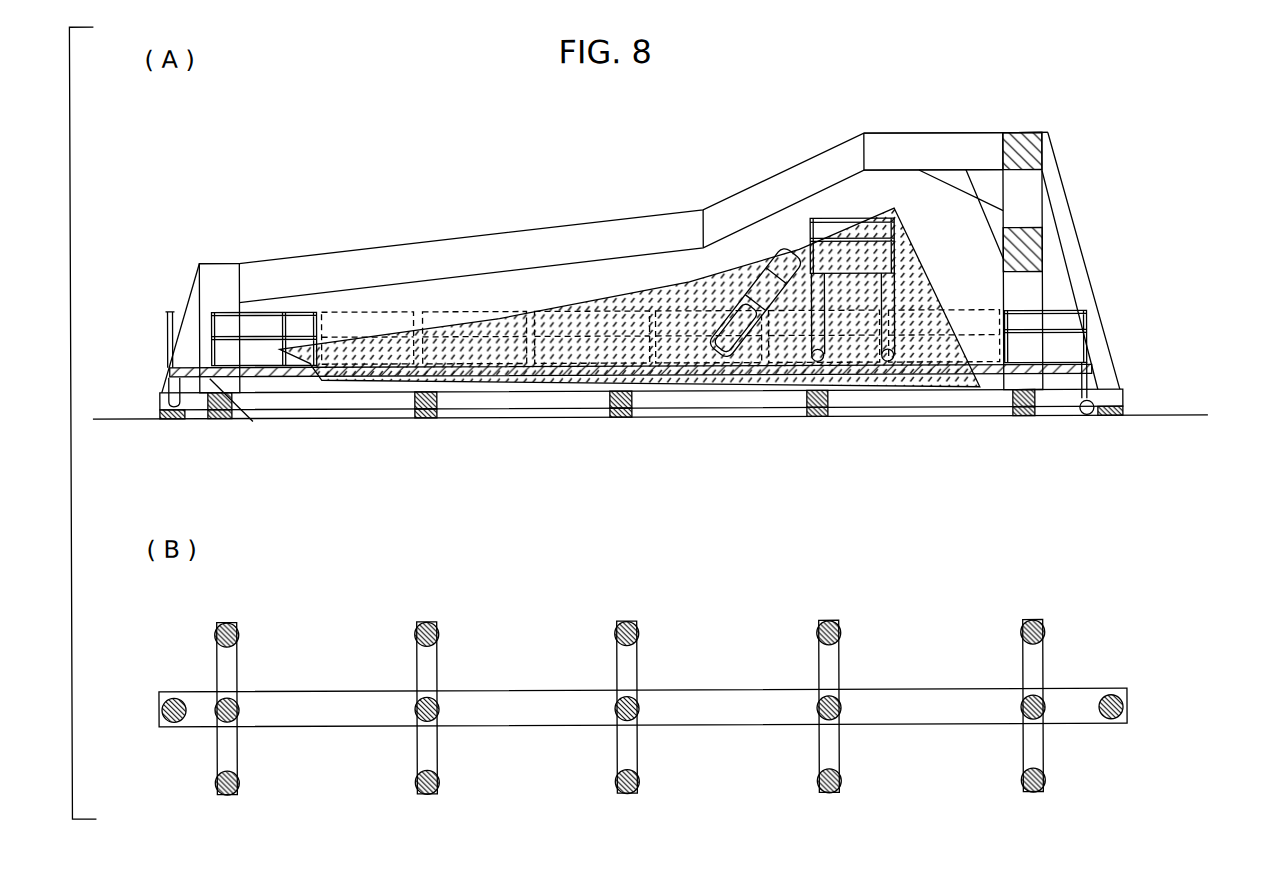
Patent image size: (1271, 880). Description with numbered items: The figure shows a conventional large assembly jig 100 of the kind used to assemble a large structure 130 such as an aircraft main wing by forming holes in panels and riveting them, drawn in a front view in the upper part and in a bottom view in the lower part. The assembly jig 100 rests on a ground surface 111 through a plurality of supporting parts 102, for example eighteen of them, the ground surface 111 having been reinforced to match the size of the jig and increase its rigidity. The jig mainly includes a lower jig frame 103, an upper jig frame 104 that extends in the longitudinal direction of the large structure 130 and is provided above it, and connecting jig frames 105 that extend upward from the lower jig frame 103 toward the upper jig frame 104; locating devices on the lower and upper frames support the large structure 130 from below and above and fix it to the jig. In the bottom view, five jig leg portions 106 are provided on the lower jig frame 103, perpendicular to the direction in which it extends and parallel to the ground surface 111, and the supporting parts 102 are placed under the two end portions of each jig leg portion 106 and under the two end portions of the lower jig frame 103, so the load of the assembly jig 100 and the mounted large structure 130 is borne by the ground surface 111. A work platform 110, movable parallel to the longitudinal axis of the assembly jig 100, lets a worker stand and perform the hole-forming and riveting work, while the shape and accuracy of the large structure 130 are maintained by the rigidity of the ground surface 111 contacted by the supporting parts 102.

The assembly jig 100 is at (1014, 102).
The supporting parts 102 is at (164, 420).
The lower jig frame 103 is at (1126, 395).
The upper jig frame 104 is at (944, 134).
The connecting jig frames 105 is at (224, 275).
The jig leg portions 106 is at (208, 400).
The work platform 110 is at (821, 219).
The ground surface 111 is at (1196, 417).
The large structure 130 is at (915, 254).